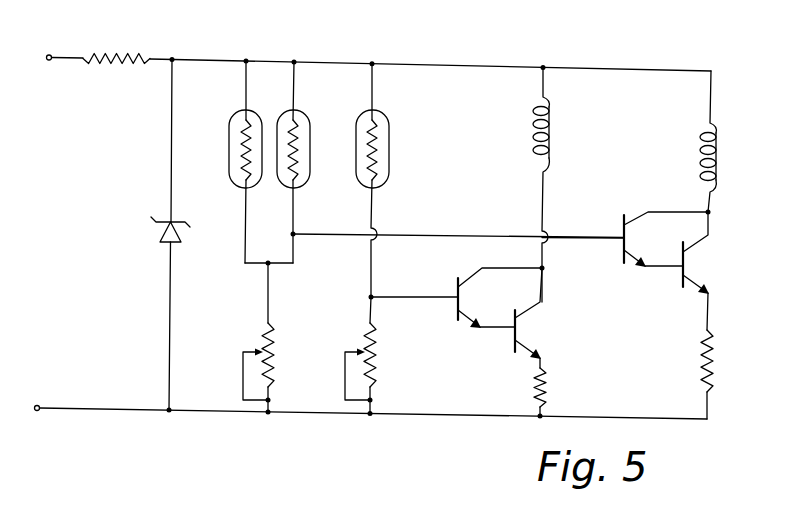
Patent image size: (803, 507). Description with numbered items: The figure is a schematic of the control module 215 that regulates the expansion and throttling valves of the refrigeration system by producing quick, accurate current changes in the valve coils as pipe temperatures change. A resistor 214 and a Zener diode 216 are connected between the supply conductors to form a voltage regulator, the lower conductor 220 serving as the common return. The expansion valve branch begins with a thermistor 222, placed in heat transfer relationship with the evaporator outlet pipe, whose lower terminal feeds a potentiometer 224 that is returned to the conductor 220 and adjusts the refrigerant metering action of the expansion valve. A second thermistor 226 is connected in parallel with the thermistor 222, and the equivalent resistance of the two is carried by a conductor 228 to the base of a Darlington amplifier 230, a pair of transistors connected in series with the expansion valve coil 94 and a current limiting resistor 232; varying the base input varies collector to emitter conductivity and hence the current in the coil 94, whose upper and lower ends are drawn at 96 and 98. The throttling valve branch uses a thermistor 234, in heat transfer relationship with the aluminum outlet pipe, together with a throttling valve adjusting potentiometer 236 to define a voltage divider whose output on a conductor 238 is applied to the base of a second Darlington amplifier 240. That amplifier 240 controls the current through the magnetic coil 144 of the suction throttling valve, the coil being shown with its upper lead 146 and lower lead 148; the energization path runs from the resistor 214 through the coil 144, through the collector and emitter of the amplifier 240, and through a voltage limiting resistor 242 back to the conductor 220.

The resistor 214 is at (128, 52).
The conductor 228 is at (215, 60).
The control module 215 is at (458, 53).
The thermistor 222 is at (234, 128).
The second thermistor 226 is at (298, 128).
The thermistor 234 is at (386, 130).
The coil L1 upper lead 146 is at (543, 97).
The magnetic coil 144 is at (548, 138).
The coil L1 lower lead 148 is at (542, 204).
The coil L2 upper lead 96 is at (710, 100).
The expansion valve coil 94 is at (716, 152).
The coil L2 lower lead 98 is at (712, 205).
The Zener diode 216 is at (180, 238).
The conductor 220 is at (210, 412).
The potentiometer 224 is at (274, 357).
The throttling valve adjusting potentiometer 236 is at (378, 357).
The conductor 238 is at (420, 297).
The Darlington amplifier 240 is at (455, 302).
The voltage limiting resistor 242 is at (545, 379).
The Darlington amplifier 230 is at (620, 247).
The current limiting resistor 232 is at (715, 348).